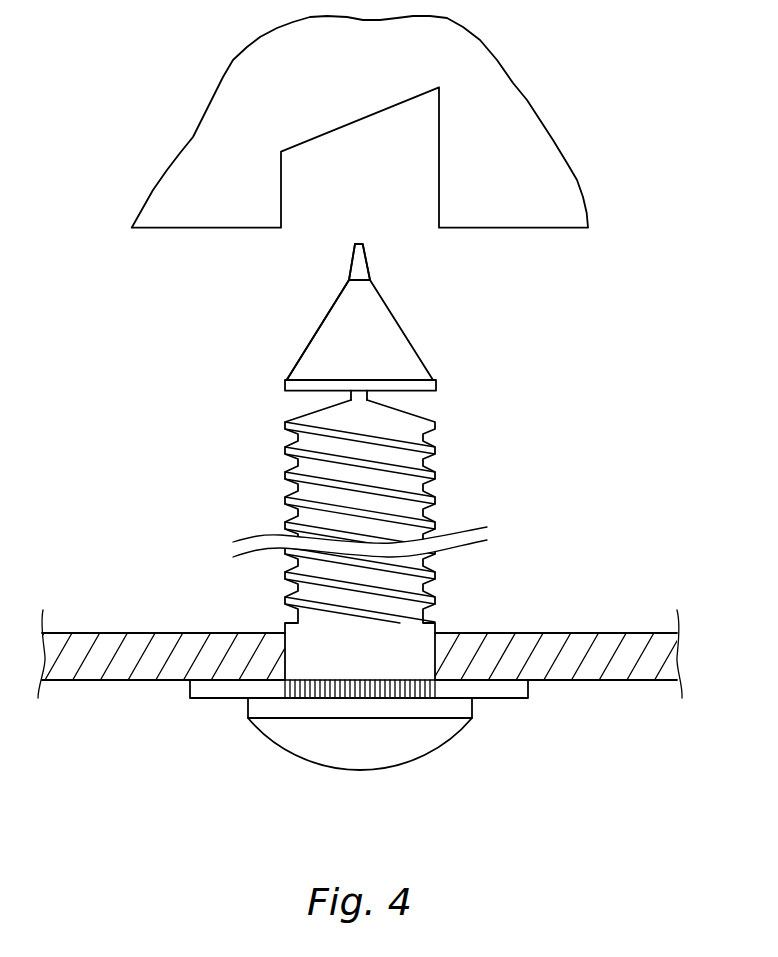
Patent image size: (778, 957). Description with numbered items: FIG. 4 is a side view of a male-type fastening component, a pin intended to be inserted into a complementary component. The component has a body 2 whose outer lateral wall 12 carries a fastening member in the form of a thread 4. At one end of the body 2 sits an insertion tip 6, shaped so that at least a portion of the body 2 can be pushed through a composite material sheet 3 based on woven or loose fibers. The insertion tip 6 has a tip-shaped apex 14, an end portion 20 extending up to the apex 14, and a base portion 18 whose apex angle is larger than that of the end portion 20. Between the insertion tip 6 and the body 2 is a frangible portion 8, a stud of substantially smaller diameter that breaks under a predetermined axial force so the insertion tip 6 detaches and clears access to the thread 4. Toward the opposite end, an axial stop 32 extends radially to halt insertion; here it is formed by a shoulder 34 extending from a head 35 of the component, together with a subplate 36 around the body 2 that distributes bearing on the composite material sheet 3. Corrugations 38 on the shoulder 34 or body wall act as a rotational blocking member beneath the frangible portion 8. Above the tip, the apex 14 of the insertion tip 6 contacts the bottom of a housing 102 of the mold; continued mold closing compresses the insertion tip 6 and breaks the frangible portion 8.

The housing of the mold 102 is at (303, 193).
The apex 14 is at (360, 244).
The end portion 20 is at (368, 263).
The insertion tip 6 is at (387, 353).
The base portion 18 is at (300, 358).
The frangible portion 8 is at (363, 400).
The body 2 is at (395, 540).
The thread 4 is at (421, 540).
The outer lateral wall 12 is at (433, 487).
The composite material sheet 3 is at (642, 655).
The axial stop 32 is at (202, 672).
The subplate 36 is at (185, 690).
The corrugations 38 is at (410, 688).
The shoulder 34 is at (243, 707).
The head 35 is at (325, 740).